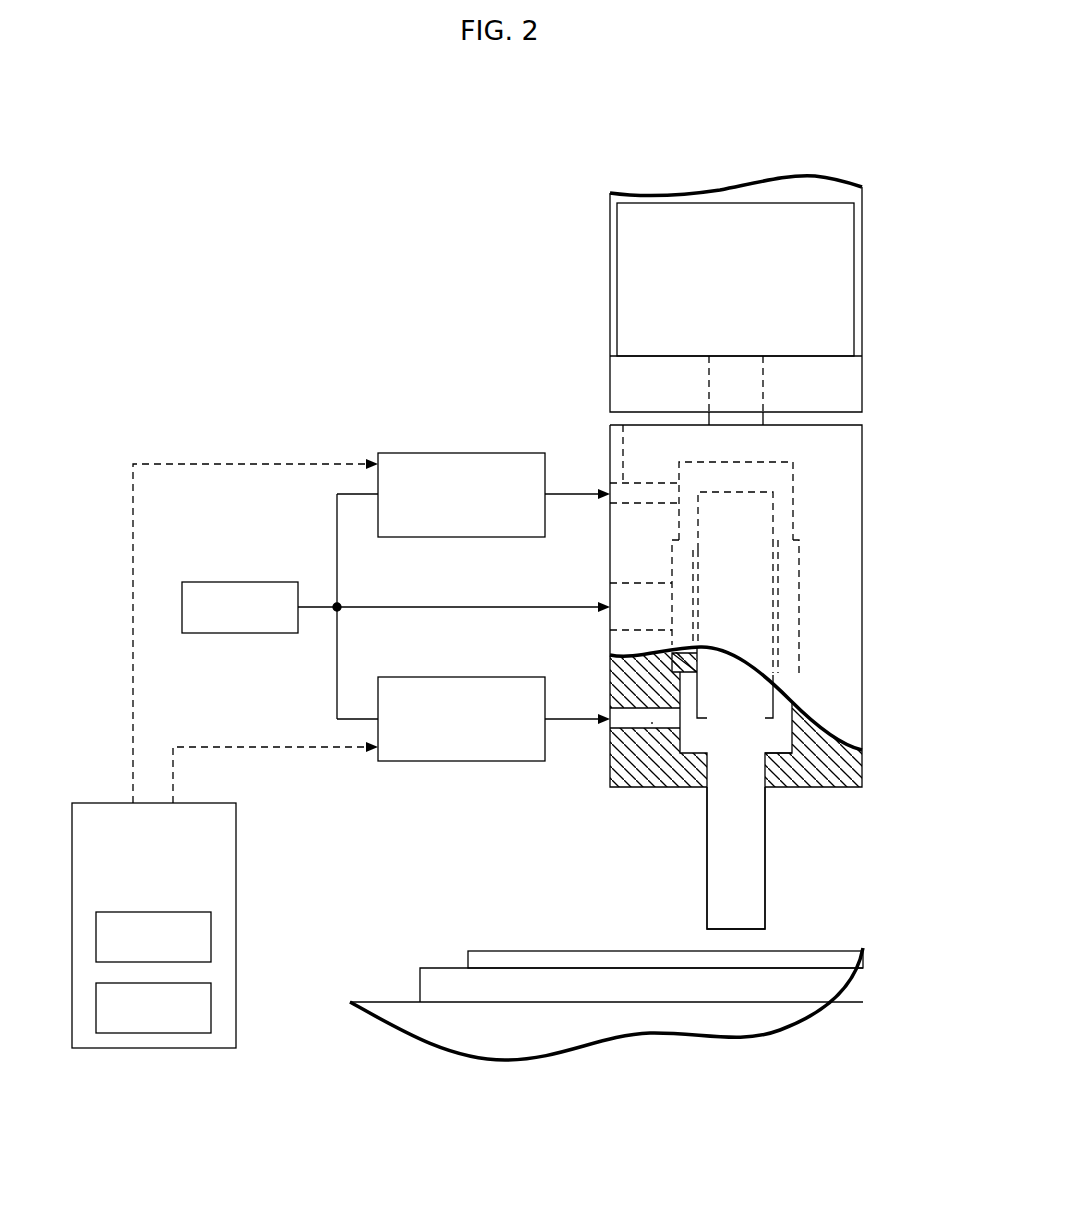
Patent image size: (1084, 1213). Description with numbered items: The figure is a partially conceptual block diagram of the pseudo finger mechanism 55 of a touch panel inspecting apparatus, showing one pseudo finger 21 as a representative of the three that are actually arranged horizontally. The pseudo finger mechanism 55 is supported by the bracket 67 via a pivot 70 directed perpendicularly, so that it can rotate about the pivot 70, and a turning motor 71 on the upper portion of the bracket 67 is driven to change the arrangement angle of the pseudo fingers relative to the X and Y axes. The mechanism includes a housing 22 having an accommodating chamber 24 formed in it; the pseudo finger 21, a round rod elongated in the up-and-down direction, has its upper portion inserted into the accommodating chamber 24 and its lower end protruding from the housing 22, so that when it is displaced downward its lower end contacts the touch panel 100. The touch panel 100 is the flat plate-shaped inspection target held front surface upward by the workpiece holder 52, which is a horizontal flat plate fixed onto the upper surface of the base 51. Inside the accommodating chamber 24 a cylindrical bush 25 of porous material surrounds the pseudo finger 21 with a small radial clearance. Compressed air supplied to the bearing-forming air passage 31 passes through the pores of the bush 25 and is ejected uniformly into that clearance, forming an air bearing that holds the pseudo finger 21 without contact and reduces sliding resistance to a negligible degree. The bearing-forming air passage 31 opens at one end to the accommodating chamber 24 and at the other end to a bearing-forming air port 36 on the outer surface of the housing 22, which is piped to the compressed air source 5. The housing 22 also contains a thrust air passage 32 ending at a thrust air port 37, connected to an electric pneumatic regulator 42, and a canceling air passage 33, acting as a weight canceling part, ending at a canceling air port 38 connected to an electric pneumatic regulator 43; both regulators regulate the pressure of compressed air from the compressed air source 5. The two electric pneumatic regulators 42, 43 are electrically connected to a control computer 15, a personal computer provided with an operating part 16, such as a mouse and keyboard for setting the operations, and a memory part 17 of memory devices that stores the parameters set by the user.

The compressed air source 5 is at (246, 582).
The control computer 15 is at (225, 756).
The operating part 16 is at (211, 942).
The memory part 17 is at (211, 1015).
The pseudo finger 21 is at (765, 835).
The housing 22 is at (847, 620).
The accommodating chamber 24 is at (785, 757).
The bush 25 is at (799, 583).
The bearing-forming air passage 31 is at (608, 595).
The thrust air passage 32 is at (610, 413).
The canceling air passage 33 is at (652, 722).
The bearing-forming air port 36 is at (610, 620).
The thrust air port 37 is at (610, 490).
The canceling air port 38 is at (610, 725).
The electric pneumatic regulator 42 is at (435, 453).
The electric pneumatic regulator 43 is at (425, 761).
The base 51 is at (440, 1032).
The workpiece holder 52 is at (428, 983).
The pseudo finger mechanism 55 is at (706, 666).
The bracket 67 is at (718, 294).
The pivot 70 is at (763, 400).
The turning motor 71 is at (662, 255).
The touch panel 100 is at (625, 960).